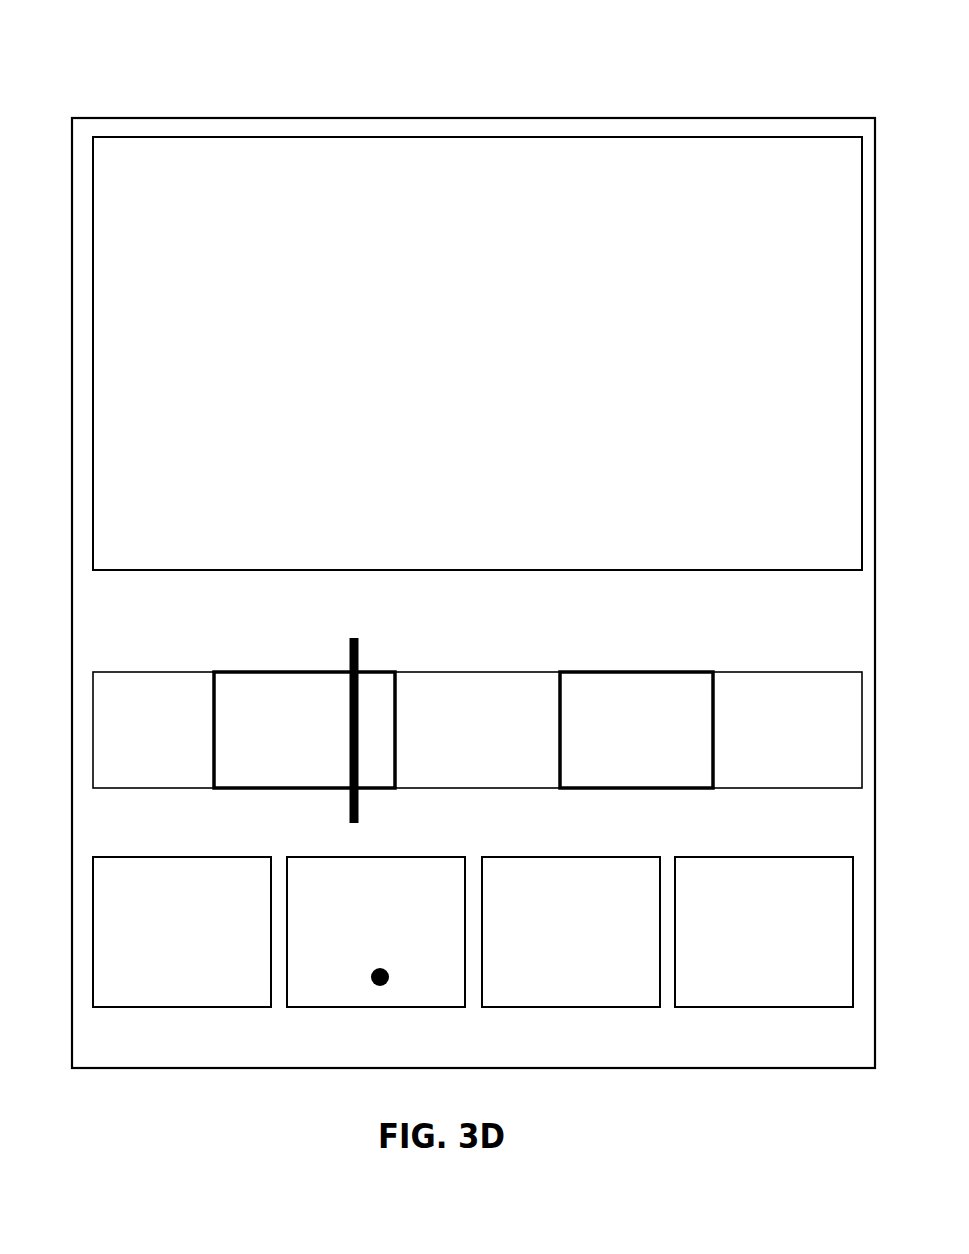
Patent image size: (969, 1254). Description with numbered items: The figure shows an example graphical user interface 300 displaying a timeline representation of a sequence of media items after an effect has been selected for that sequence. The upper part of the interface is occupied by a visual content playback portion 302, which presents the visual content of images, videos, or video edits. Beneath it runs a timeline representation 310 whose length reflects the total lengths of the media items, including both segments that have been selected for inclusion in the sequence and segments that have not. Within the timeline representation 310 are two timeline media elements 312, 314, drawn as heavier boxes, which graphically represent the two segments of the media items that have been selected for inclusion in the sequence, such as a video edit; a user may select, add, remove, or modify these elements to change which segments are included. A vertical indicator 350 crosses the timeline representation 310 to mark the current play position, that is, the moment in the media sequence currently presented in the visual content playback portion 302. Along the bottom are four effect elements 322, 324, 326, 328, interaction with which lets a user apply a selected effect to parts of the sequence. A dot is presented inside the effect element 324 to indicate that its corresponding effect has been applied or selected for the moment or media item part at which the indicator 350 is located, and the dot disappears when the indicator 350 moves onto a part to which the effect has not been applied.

The graphical user interface 300 is at (497, 118).
The visual content playback portion 302 is at (477, 353).
The timeline representation 310 is at (125, 690).
The timeline media element 312 is at (272, 672).
The timeline media element 314 is at (642, 675).
The indicator 350 is at (357, 650).
The effect element 322 is at (182, 932).
The effect element 324 is at (376, 932).
The effect element 326 is at (571, 932).
The effect element 328 is at (764, 932).